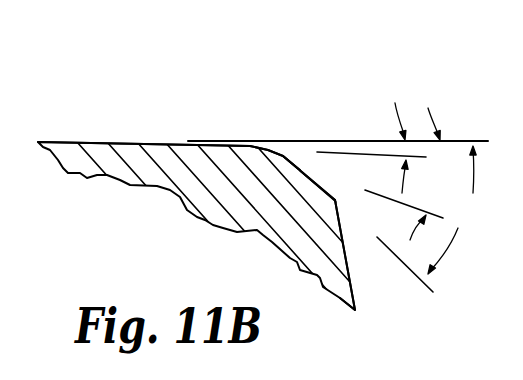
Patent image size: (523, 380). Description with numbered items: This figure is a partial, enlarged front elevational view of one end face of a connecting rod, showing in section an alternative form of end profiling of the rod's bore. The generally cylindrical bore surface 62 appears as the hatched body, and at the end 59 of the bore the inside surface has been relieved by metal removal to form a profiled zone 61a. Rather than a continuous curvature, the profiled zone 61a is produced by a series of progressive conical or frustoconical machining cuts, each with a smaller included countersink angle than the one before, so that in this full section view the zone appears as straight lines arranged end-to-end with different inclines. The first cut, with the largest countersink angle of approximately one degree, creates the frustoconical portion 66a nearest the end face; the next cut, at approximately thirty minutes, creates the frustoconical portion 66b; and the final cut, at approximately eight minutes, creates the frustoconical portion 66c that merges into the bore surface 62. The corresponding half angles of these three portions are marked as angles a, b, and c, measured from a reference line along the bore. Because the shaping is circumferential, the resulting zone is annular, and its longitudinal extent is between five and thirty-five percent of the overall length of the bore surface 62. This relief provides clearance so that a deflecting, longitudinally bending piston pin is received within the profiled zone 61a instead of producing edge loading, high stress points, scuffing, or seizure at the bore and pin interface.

The bore surface 62 is at (93, 141).
The frustoconical portion 66c is at (175, 141).
The frustoconical portion 66b is at (281, 150).
The frustoconical portion 66a is at (320, 184).
The profiled zone 61a is at (355, 126).
The end of connecting rod bore 59 is at (352, 292).
The half angle a is at (426, 219).
The half angle b is at (405, 200).
The half angle c is at (378, 118).